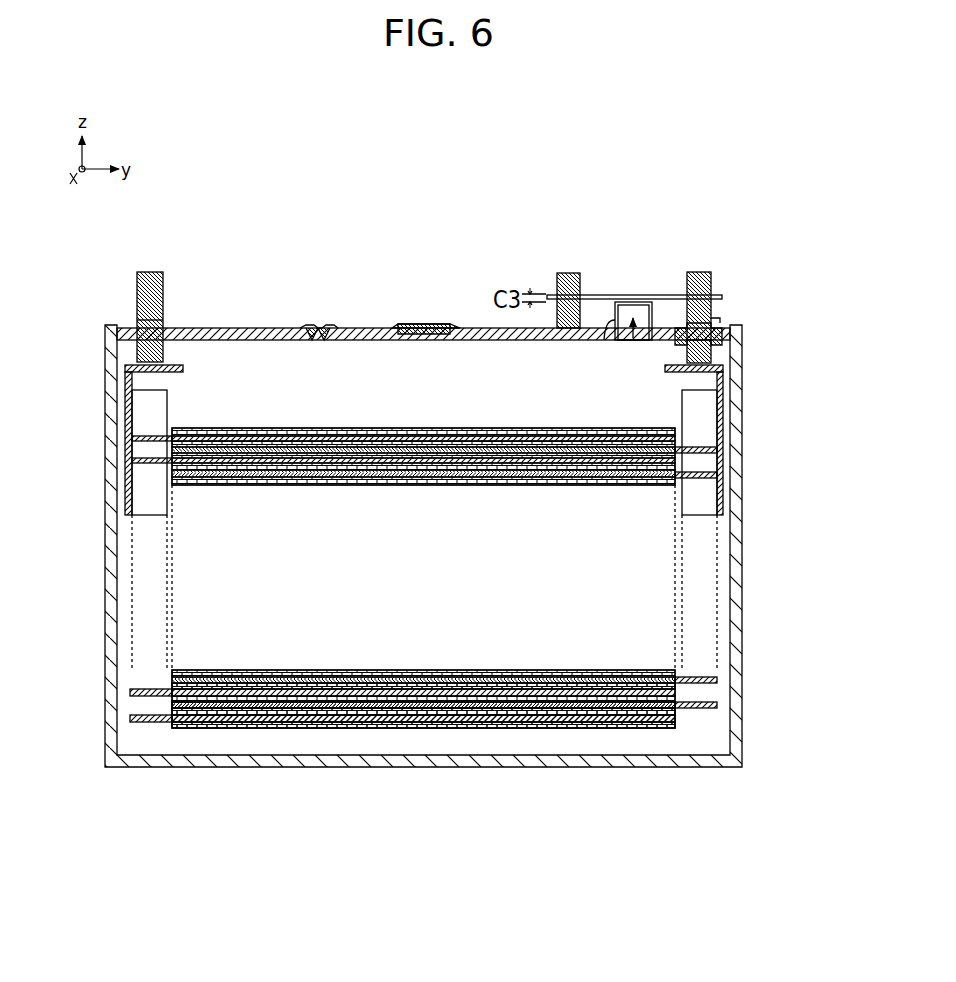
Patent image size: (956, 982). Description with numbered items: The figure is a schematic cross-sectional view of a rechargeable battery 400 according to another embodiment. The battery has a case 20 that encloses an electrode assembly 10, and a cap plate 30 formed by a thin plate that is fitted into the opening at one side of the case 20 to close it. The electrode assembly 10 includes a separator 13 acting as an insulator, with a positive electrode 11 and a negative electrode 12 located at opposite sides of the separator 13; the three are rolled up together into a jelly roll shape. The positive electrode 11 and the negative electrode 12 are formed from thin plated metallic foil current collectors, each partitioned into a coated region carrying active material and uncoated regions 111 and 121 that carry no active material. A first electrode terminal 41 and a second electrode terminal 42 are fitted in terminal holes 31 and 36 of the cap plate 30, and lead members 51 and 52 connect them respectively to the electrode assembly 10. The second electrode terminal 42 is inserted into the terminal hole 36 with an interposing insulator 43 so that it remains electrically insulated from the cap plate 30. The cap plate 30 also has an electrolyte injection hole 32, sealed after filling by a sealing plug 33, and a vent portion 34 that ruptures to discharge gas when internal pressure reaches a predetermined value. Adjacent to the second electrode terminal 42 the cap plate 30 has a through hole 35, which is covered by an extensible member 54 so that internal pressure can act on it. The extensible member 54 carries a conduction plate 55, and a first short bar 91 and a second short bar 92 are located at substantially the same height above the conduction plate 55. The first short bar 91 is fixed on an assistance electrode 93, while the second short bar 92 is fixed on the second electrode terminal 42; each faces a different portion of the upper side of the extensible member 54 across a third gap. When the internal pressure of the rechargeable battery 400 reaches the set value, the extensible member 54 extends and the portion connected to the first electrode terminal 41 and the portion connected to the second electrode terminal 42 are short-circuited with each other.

The rechargeable battery 400 is at (593, 146).
The case 20 is at (741, 555).
The cap plate 30 is at (250, 328).
The terminal hole 31 is at (160, 316).
The electrolyte injection hole 32 is at (318, 340).
The sealing plug 33 is at (318, 328).
The vent portion 34 is at (432, 326).
The through hole 35 is at (640, 342).
The terminal hole 36 is at (712, 322).
The first electrode terminal 41 is at (151, 272).
The second electrode terminal 42 is at (699, 272).
The insulator 43 is at (722, 330).
The lead member 51 is at (124, 382).
The lead member 52 is at (724, 375).
The extensible member 54 is at (614, 322).
The conduction plate 55 is at (630, 300).
The first short bar 91 is at (603, 295).
The second short bar 92 is at (647, 302).
The assistance electrode 93 is at (568, 272).
The electrode assembly 10 is at (495, 650).
The positive electrode 11 is at (252, 722).
The negative electrode 12 is at (298, 708).
The separator 13 is at (420, 686).
The uncoated region 111 is at (150, 722).
The uncoated region 121 is at (692, 708).